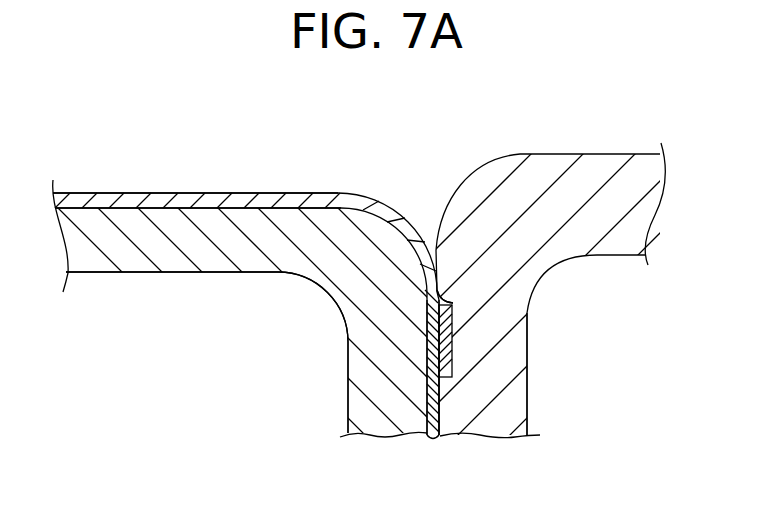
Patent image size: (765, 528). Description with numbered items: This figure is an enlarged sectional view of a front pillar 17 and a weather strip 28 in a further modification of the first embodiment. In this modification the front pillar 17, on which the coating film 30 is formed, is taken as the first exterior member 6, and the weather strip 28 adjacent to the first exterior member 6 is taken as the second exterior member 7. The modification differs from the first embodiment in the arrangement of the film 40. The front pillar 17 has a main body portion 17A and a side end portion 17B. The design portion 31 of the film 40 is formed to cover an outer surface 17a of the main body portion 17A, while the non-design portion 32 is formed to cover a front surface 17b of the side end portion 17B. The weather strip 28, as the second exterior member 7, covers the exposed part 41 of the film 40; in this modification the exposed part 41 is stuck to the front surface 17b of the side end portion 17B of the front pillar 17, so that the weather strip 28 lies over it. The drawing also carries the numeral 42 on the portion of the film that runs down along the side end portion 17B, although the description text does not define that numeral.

The first exterior member 6 is at (142, 127).
The second exterior member 7 is at (543, 107).
The front pillar 17 is at (130, 262).
The main body portion 17A is at (187, 262).
The side end portion 17B is at (368, 374).
The outer surface 17a is at (270, 203).
The front surface 17b is at (453, 303).
The weather strip 28 is at (600, 185).
The coating film 30 is at (120, 192).
The design portion 31 is at (194, 200).
The non-design portion 32 is at (452, 350).
The film 40 is at (436, 415).
The exposed part 41 is at (440, 385).
The vertical portion of insulating layer 42 is at (427, 330).